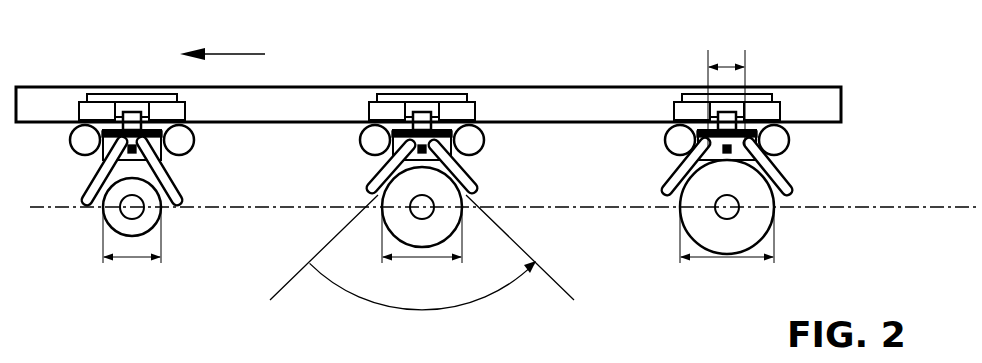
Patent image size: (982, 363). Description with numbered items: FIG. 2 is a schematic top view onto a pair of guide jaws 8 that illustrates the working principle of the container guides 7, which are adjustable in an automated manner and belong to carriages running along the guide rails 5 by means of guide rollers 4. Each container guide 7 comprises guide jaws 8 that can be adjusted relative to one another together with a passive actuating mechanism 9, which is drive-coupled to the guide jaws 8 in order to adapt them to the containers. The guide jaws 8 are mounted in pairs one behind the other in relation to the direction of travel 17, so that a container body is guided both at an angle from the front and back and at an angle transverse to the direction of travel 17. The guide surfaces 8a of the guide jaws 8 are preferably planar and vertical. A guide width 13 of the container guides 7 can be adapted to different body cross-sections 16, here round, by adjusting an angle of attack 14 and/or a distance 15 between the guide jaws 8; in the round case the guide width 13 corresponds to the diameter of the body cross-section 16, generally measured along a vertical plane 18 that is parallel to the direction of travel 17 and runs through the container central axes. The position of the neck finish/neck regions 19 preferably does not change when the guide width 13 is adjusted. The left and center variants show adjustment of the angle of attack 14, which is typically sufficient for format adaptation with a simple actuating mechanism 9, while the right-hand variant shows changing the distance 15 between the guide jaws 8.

The guide rollers 4 is at (375, 110).
The guide rails 5 is at (540, 100).
The container guides 7 is at (198, 164).
The guide jaws 8 is at (377, 176).
The guide surfaces 8a is at (142, 160).
The actuating mechanism 9 is at (132, 111).
The guide width 13 is at (137, 260).
The angle of attack 14 is at (348, 294).
The distance 15 is at (727, 66).
The body cross-section 16 is at (153, 221).
The direction of travel 17 is at (232, 52).
The vertical plane 18 is at (601, 209).
The neck finish/neck regions 19 is at (126, 216).